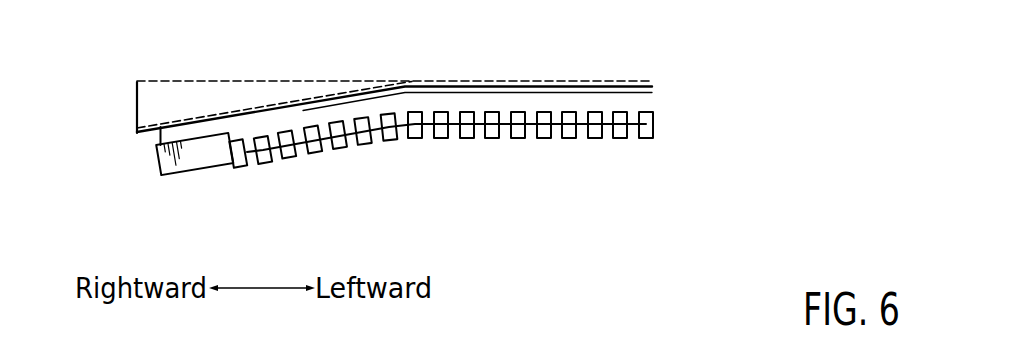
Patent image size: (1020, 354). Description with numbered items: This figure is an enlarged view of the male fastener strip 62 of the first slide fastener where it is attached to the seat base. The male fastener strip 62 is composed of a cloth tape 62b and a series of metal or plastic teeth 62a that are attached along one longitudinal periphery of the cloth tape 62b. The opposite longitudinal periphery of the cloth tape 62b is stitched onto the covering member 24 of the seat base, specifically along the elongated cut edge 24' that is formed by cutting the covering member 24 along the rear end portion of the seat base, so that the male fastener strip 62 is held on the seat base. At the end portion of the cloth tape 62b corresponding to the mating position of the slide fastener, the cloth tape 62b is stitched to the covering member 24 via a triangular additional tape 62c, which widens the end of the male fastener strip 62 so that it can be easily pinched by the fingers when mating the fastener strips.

The covering member 24 is at (394, 136).
The cut edge 24' is at (394, 68).
The male fastener strip 62 is at (533, 151).
The teeth 62a is at (313, 148).
The cloth tape 62b is at (625, 98).
The triangular additional tape 62c is at (145, 110).